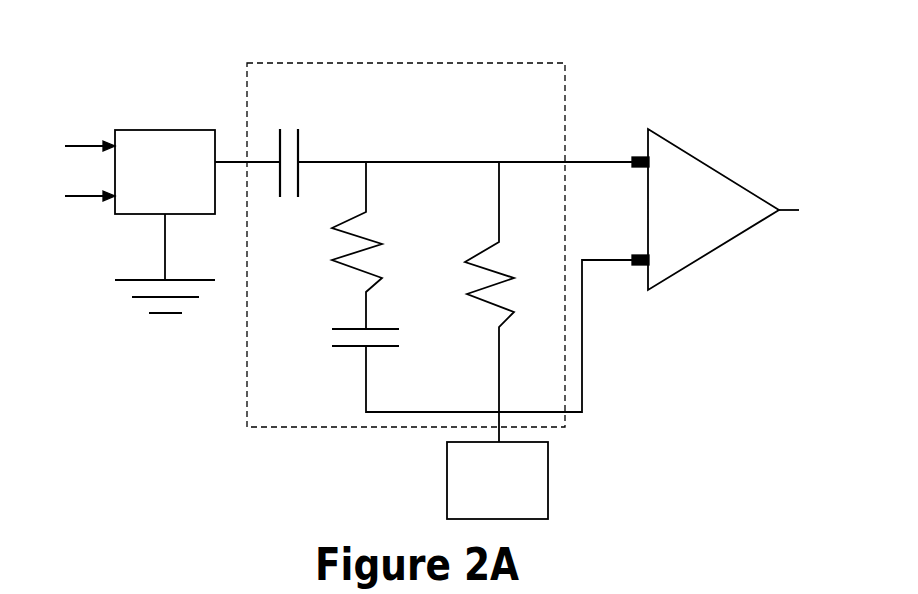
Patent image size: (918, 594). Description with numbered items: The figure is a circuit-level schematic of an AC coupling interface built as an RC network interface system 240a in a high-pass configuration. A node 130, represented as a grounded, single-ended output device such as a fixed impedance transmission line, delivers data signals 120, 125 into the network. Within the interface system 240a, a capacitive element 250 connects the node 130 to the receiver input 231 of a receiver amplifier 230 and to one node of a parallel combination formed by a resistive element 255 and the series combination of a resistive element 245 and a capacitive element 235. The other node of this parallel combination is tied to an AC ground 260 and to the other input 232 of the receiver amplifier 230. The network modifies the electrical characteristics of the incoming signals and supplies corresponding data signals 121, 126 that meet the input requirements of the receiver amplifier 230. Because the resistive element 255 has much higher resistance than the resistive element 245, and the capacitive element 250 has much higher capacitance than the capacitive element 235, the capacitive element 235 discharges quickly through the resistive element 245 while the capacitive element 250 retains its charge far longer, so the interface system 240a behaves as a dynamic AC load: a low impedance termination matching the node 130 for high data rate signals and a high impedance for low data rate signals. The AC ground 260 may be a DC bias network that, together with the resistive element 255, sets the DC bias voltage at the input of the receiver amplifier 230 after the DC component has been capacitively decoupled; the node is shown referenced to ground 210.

The data signal 120 is at (82, 140).
The data signal 125 is at (93, 208).
The node 130 is at (149, 127).
The ground 210 is at (162, 313).
The capacitive element 250 is at (298, 127).
The RC network interface system 240a is at (563, 58).
The data signal 121 is at (579, 150).
The data signal 126 is at (597, 163).
The receiver input 231 is at (641, 150).
The other input 232 is at (645, 272).
The receiver amplifier 230 is at (684, 145).
The resistive element 245 is at (330, 261).
The resistive element 255 is at (463, 260).
The capacitive element 235 is at (332, 344).
The AC ground 260 is at (445, 500).